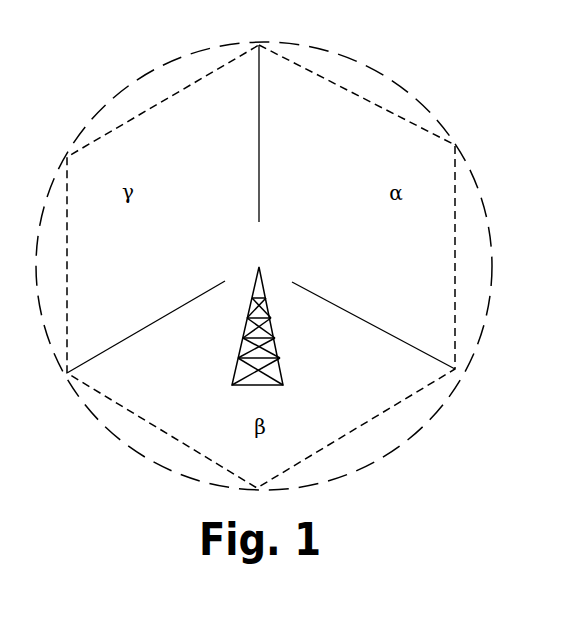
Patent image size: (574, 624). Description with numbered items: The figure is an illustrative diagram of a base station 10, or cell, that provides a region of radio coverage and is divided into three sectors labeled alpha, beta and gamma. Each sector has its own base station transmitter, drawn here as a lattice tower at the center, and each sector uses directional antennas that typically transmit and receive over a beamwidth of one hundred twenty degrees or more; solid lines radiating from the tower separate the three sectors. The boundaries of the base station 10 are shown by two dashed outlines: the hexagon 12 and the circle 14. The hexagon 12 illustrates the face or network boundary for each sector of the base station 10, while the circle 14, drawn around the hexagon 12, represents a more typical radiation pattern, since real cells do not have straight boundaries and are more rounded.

The base station 10 is at (266, 284).
The hexagon 12 is at (316, 79).
The circle 14 is at (448, 134).